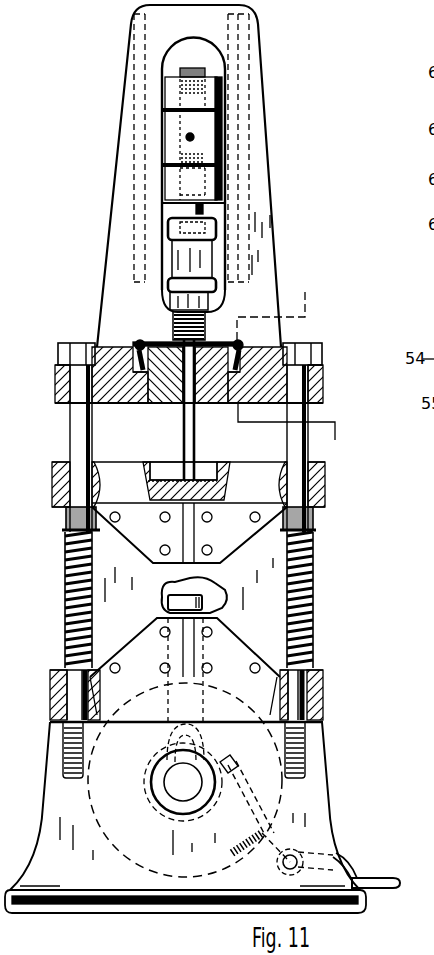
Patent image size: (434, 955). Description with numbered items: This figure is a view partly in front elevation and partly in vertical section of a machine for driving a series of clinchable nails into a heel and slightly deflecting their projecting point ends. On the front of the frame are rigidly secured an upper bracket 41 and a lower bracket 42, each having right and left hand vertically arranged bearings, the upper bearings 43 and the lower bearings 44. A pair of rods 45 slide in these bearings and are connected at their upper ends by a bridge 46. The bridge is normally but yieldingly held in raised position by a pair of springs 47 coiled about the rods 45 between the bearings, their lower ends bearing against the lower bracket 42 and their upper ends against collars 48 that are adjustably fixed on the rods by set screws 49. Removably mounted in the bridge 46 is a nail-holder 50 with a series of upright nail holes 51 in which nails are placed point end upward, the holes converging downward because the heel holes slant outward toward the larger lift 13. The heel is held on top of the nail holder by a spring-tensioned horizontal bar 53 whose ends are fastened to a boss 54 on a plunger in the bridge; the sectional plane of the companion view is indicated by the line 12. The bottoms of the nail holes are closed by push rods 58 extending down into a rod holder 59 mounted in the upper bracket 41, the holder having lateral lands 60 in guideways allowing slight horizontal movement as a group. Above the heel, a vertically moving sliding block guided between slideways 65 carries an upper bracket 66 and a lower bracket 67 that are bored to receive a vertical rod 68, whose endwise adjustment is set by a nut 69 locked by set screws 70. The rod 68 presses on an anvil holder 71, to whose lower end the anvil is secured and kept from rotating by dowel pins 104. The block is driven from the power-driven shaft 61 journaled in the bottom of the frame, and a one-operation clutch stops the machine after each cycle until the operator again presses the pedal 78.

The section line 12 is at (296, 366).
The larger lift 13 is at (175, 307).
The upper bracket 41 is at (252, 470).
The lower bracket 42 is at (186, 699).
The upper bearings 43 is at (325, 475).
The lower bearings 44 is at (50, 680).
The rods 45 is at (73, 436).
The bridge 46 is at (325, 382).
The springs 47 is at (65, 582).
The collars 48 is at (318, 520).
The set screws 49 is at (317, 526).
The nail-holder 50 is at (155, 405).
The nail holes 51 is at (175, 405).
The bar 53 is at (163, 343).
The boss 54 is at (247, 345).
The push rods 58 is at (197, 432).
The rod holder 59 is at (212, 465).
The lands 60 is at (147, 473).
The power-driven shaft 61 is at (183, 772).
The slideways 65 is at (243, 118).
The upper bracket 66 is at (225, 90).
The lower bracket 67 is at (250, 180).
The rod 68 is at (203, 210).
The nut 69 is at (225, 138).
The set screws 70 is at (186, 136).
The anvil holder 71 is at (180, 255).
The pedal 78 is at (373, 877).
The dowel pins 104 is at (177, 298).